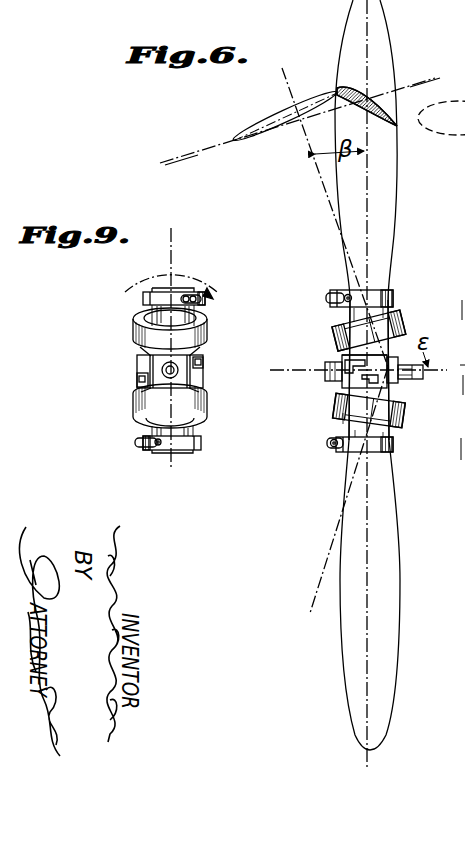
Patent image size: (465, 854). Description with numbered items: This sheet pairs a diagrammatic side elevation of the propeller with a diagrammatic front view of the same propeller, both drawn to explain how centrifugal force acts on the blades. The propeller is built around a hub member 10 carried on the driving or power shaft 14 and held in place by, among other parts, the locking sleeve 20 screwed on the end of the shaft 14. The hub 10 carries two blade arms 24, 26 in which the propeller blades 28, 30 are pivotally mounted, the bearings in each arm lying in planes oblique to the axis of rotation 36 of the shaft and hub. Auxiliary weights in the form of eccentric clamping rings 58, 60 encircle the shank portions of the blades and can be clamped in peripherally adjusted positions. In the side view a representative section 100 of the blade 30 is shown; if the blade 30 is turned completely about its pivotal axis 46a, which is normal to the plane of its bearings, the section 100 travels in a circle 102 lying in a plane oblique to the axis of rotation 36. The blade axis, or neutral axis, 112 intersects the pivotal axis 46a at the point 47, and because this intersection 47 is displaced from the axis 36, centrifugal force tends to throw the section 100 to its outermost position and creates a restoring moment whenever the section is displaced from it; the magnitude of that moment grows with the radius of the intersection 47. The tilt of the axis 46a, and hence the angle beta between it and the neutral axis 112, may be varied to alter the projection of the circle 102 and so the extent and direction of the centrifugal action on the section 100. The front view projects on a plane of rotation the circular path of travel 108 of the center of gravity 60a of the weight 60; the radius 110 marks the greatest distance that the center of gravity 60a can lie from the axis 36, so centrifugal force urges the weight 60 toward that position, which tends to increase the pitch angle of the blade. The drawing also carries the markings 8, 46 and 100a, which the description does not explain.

In FIG. 6, the section line 8- 8 is at (168, 123).
In FIG. 6, the hub member 10 is at (342, 402).
In FIG. 9, the hub member 10 is at (201, 393).
In FIG. 6, the driving or power shaft 14 is at (413, 379).
In FIG. 6, the locking sleeve 20 is at (338, 382).
In FIG. 6, the blade arm 24 is at (402, 424).
In FIG. 9, the blade arm 24 is at (205, 423).
In FIG. 6, the blade arm 26 is at (402, 337).
In FIG. 9, the blade arm 26 is at (172, 367).
In FIG. 6, the propeller blade 28 is at (383, 548).
In FIG. 6, the propeller blade 30 is at (394, 213).
In FIG. 6, the axis of rotation 36 is at (314, 369).
In FIG. 9, the axis of rotation 36 is at (165, 368).
In FIG. 6, the blade pitch axis 46 is at (321, 580).
In FIG. 6, the pivotal axis of the blade 46a is at (323, 190).
In FIG. 6, the intersection 47 is at (374, 317).
In FIG. 6, the eccentric clamping ring 58 is at (337, 447).
In FIG. 9, the eccentric clamping ring 58 is at (137, 443).
In FIG. 6, the eccentric clamping ring 60 is at (338, 291).
In FIG. 9, the eccentric clamping ring 60 is at (143, 297).
In FIG. 9, the center of gravity of weight 60a is at (196, 297).
In FIG. 6, the representative section of the blade 100 is at (357, 88).
In FIG. 6, the blade airfoil section (second) 100a is at (461, 96).
In FIG. 6, the circle 102 is at (270, 118).
In FIG. 9, the circular path of travel 108 is at (118, 287).
In FIG. 9, the radius 110 is at (213, 291).
In FIG. 6, the blade axis 112 is at (367, 174).